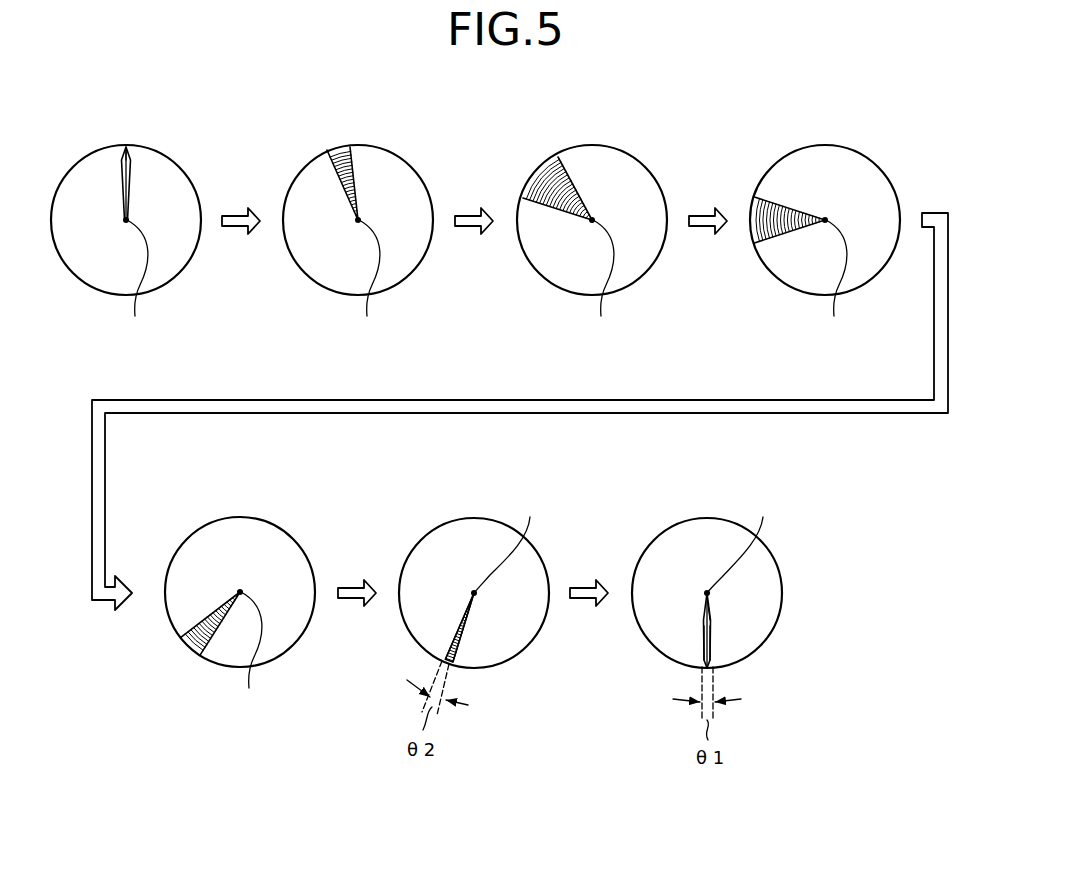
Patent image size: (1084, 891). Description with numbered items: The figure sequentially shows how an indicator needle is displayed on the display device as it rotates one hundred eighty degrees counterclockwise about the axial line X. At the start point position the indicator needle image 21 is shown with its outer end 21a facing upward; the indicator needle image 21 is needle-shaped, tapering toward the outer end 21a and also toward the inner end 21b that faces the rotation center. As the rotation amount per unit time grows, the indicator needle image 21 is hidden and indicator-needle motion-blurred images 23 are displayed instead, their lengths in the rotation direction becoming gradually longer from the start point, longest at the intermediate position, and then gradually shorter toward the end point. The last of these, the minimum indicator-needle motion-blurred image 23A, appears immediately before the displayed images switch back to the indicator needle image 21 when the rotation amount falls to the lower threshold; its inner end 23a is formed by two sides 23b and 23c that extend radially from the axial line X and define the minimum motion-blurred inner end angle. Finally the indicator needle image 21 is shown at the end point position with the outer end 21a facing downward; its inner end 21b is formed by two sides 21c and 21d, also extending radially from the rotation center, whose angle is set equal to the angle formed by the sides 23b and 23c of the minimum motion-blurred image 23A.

The indicator needle image 21 is at (119, 168).
The outer end 21a is at (126, 147).
The inner end 21b is at (725, 607).
The side 21c is at (707, 626).
The side 21d is at (707, 626).
The indicator-needle motion-blurred image 23 is at (361, 176).
The minimum indicator-needle motion-blurred image 23A is at (439, 567).
The inner end 23a is at (485, 612).
The side 23b is at (442, 637).
The side 23c is at (442, 637).
The axial line X is at (487, 469).